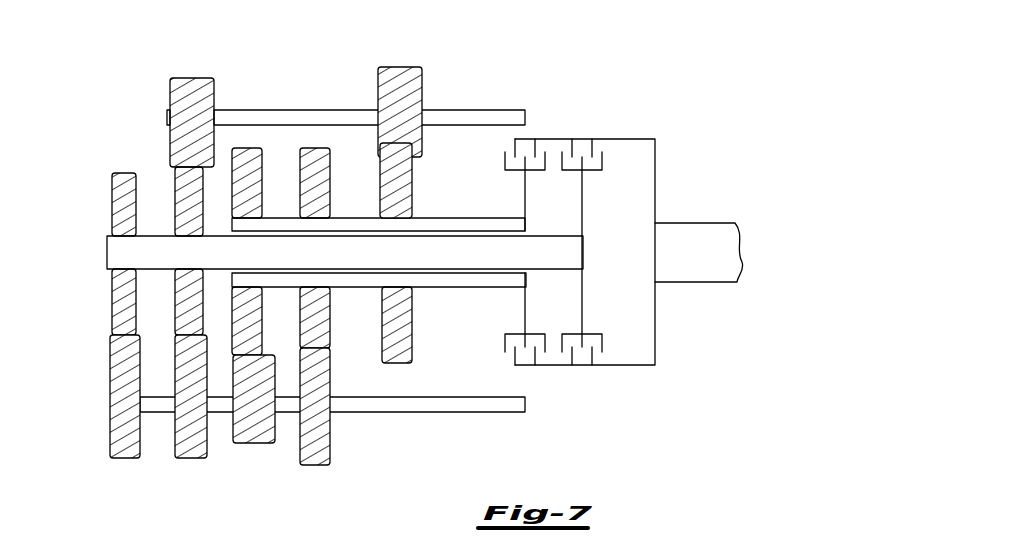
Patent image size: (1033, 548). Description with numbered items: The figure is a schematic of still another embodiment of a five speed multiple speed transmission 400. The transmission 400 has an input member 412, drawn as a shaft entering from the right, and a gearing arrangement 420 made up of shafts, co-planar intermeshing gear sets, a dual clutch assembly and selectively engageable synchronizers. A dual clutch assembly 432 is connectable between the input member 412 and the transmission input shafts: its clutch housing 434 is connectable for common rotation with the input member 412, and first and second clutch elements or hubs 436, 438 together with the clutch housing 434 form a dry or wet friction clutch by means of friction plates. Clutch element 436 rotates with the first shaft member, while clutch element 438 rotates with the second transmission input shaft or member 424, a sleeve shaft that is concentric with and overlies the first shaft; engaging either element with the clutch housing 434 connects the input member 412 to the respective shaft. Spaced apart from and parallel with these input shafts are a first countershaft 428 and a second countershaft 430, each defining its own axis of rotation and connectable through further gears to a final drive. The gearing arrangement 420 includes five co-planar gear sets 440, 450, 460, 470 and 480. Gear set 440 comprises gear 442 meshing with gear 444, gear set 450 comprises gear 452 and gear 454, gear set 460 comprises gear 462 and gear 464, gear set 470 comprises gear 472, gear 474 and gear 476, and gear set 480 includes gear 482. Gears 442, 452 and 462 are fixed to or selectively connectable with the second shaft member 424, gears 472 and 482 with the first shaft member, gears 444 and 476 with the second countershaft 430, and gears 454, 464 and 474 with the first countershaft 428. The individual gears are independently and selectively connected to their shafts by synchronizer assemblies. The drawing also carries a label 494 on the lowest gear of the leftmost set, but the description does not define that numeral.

The multiple speed transmission 400 is at (694, 76).
The input member 412 is at (720, 222).
The gearing arrangement 420 is at (146, 70).
The second transmission input shaft or member 424 is at (490, 221).
The first countershaft 428 is at (515, 413).
The second countershaft 430 is at (518, 110).
The dual clutch assembly 432 is at (739, 118).
The clutch housing 434 is at (656, 350).
The first clutch element or hub 436 is at (584, 292).
The second clutch element or hub 438 is at (523, 311).
The co-planar gear set 440 is at (404, 378).
The gear 442 is at (413, 192).
The gear 444 is at (416, 85).
The co-planar gear set 450 is at (354, 430).
The gear 452 is at (329, 183).
The gear 454 is at (326, 422).
The co-planar gear set 460 is at (264, 413).
The gear 462 is at (259, 175).
The gear 464 is at (271, 377).
The co-planar gear set 470 is at (175, 414).
The gear 472 is at (176, 192).
The gear 474 is at (172, 350).
The gear 476 is at (198, 85).
The co-planar gear set 480 is at (97, 436).
The gear 482 is at (110, 202).
The gear 494 is at (111, 362).